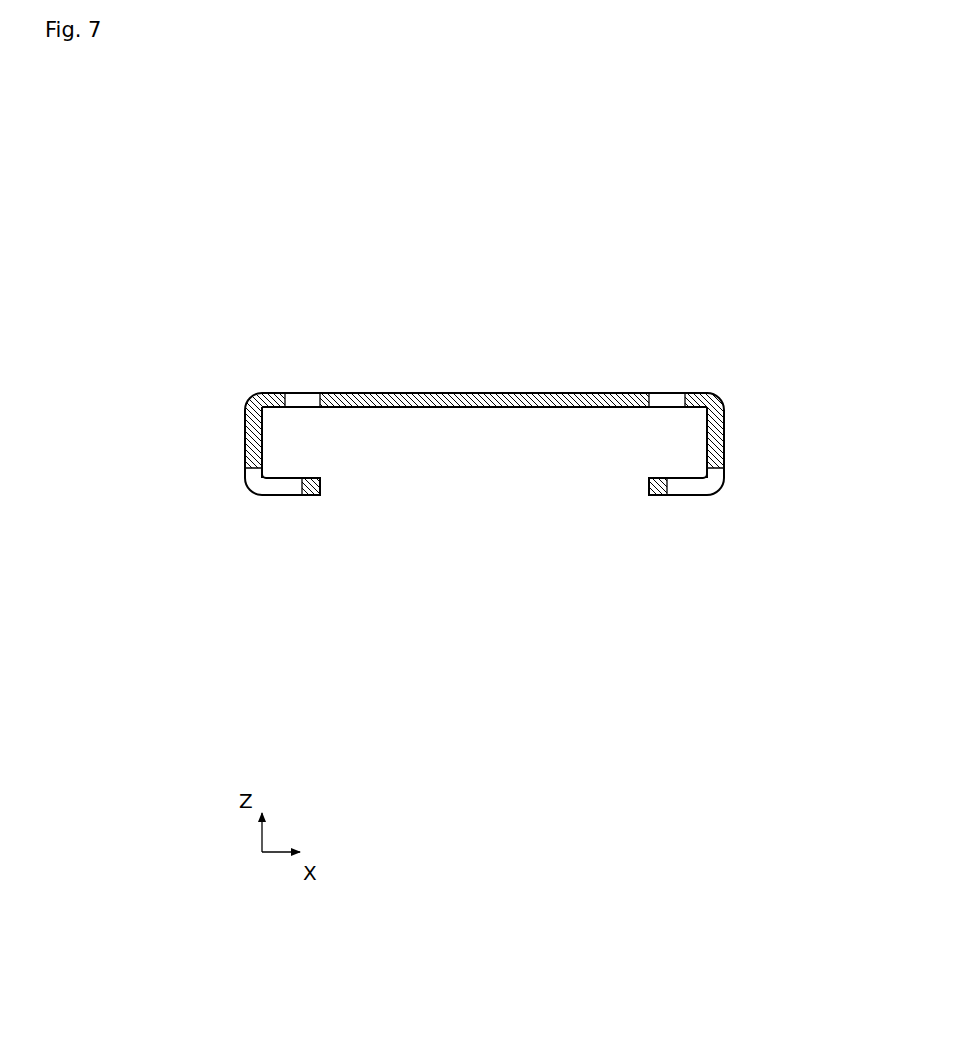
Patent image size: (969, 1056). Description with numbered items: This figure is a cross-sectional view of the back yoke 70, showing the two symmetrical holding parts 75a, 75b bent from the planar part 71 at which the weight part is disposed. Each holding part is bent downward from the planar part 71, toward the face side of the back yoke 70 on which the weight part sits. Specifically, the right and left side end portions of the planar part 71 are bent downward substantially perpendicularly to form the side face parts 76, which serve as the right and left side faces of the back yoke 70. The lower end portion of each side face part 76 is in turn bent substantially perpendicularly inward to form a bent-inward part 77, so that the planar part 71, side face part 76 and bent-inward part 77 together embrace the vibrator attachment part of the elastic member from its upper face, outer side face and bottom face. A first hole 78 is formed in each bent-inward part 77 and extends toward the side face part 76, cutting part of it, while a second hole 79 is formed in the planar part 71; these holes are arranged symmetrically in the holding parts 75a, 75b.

The back yoke 70 is at (192, 190).
The planar part 71 is at (512, 393).
The side face part 76 is at (245, 433).
The second hole 79 is at (308, 397).
The first hole 78 is at (262, 484).
The bent-inward part 77 is at (322, 495).
The holding part 75a is at (695, 530).
The holding part 75b is at (282, 530).